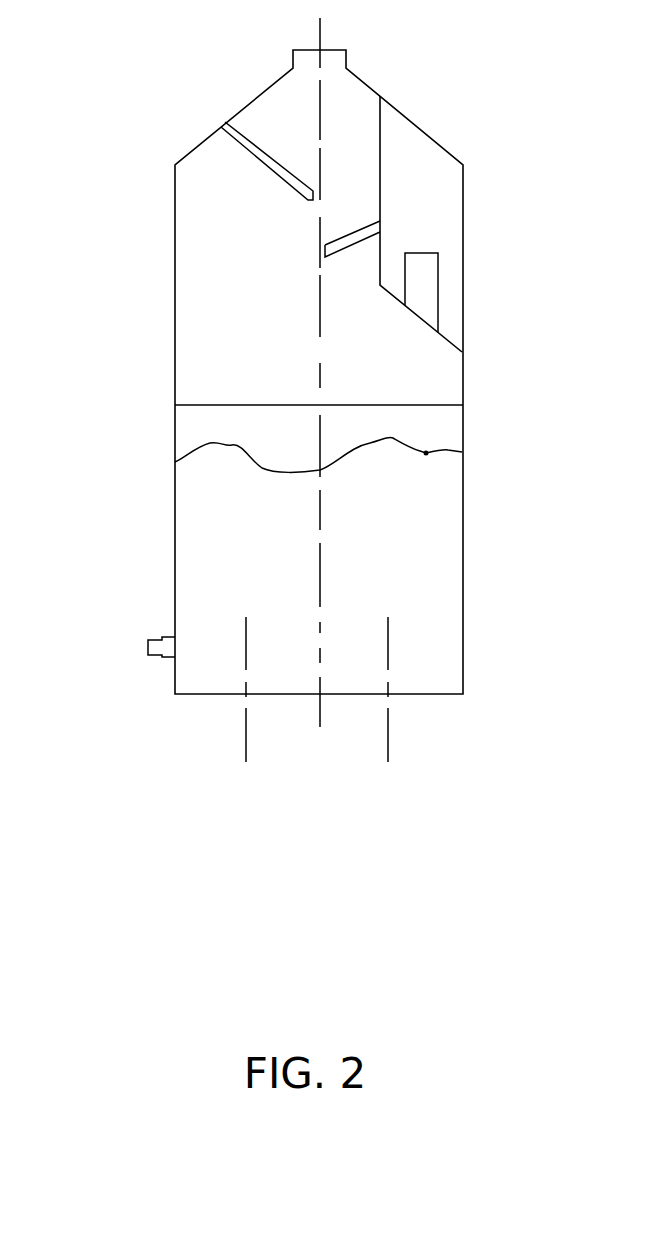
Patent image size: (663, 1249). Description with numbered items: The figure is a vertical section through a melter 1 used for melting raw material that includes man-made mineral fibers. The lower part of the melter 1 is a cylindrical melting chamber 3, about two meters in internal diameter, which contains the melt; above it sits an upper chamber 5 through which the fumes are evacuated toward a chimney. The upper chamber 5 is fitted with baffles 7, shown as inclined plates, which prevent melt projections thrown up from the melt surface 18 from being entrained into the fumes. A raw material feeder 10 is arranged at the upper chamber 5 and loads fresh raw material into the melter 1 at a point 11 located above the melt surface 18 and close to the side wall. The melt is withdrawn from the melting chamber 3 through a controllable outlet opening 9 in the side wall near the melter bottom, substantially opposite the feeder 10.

The melter 1 is at (130, 712).
The melting chamber 3 is at (175, 447).
The upper chamber 5 is at (175, 227).
The baffles 7 is at (255, 140).
The controllable outlet opening 9 is at (148, 641).
The raw material feeder 10 is at (440, 298).
The point 11 is at (426, 453).
The melt surface 18 is at (448, 450).